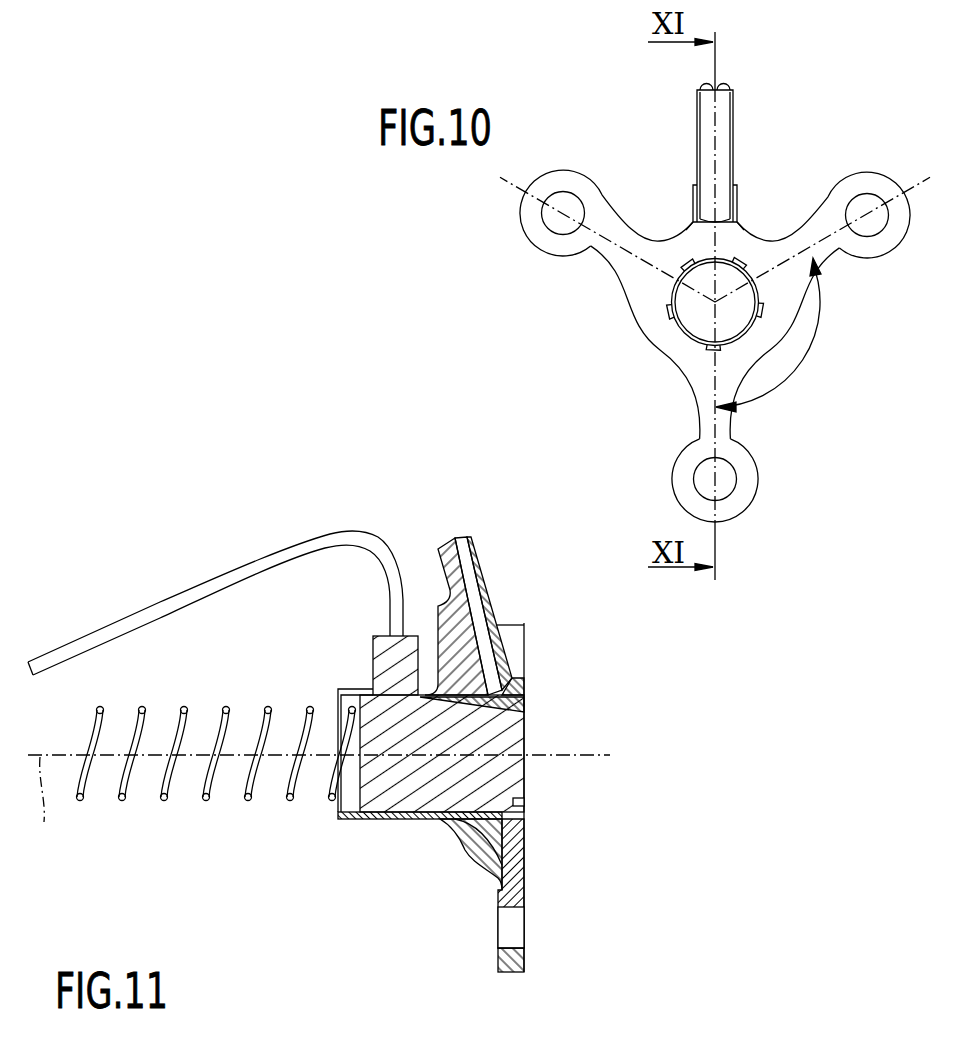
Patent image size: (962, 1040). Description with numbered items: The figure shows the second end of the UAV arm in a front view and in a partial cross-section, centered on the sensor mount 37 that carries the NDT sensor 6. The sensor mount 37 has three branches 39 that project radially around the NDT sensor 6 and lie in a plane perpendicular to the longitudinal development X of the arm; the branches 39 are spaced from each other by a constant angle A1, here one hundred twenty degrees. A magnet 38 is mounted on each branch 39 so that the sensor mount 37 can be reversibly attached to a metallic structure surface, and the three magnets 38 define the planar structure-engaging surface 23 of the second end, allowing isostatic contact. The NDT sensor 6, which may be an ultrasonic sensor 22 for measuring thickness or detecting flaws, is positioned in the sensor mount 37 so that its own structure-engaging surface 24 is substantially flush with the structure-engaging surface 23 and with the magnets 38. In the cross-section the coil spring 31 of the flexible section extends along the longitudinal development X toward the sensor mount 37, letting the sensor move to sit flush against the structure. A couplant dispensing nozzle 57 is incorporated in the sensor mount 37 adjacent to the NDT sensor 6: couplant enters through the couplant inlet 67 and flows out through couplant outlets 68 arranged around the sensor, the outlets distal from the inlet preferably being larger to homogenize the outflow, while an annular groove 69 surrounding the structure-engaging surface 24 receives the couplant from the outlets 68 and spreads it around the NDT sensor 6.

In FIG. 10, the NDT sensor 6 is at (733, 313).
In FIG. 11, the NDT sensor 6 is at (527, 778).
In FIG. 11, the ultrasonic sensor 22 is at (345, 819).
In FIG. 10, the structure-engaging surface 23 is at (600, 248).
In FIG. 11, the structure-engaging surface 23 is at (526, 962).
In FIG. 10, the structure-engaging surface 24 is at (722, 276).
In FIG. 11, the structure-engaging surface 24 is at (524, 742).
In FIG. 11, the spring 31 is at (123, 800).
In FIG. 10, the sensor mount 37 is at (715, 290).
In FIG. 11, the sensor mount 37 is at (510, 608).
In FIG. 10, the magnets 38 is at (858, 208).
In FIG. 11, the magnets 38 is at (512, 927).
In FIG. 10, the branches 39 is at (832, 258).
In FIG. 10, the couplant dispensing nozzle 57 is at (672, 338).
In FIG. 11, the couplant dispensing nozzle 57 is at (465, 845).
In FIG. 10, the couplant inlet 67 is at (723, 138).
In FIG. 11, the couplant inlet 67 is at (465, 577).
In FIG. 10, the couplant outlets 68 is at (667, 314).
In FIG. 11, the couplant outlets 68 is at (524, 712).
In FIG. 10, the annular groove 69 is at (707, 252).
In FIG. 10, the constant angle A1 is at (800, 366).
In FIG. 11, the longitudinal development X is at (319, 801).